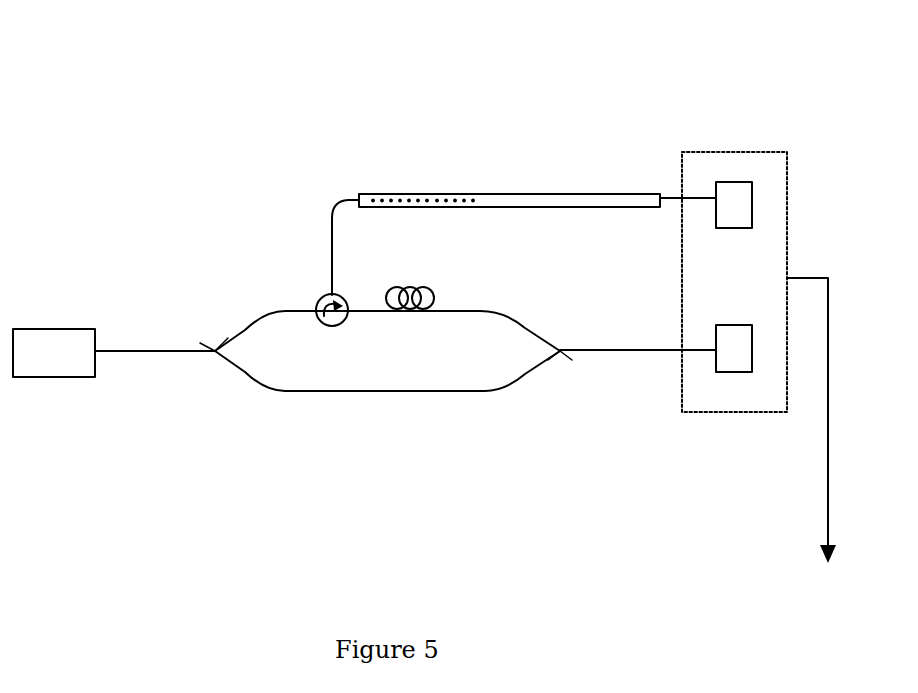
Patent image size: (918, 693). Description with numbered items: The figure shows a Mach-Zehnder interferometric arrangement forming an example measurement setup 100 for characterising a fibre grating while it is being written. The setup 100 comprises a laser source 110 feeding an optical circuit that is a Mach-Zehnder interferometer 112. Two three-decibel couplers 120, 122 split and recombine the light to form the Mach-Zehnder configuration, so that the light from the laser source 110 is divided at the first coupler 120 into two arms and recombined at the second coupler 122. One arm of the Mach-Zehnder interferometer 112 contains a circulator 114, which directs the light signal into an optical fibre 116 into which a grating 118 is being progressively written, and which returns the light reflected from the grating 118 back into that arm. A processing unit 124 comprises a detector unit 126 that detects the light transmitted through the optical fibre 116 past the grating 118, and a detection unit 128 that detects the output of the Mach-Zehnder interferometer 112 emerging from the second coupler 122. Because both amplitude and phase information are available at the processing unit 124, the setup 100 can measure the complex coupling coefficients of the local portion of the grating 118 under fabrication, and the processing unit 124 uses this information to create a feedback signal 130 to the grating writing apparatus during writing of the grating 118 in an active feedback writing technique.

The measurement setup 100 is at (186, 120).
The laser source 110 is at (45, 378).
The Mach-Zehnder interferometer 112 is at (328, 418).
The circulator 114 is at (322, 298).
The optical fibre 116 is at (369, 193).
The grating 118 is at (427, 186).
The 3 dB coupler 120 is at (214, 350).
The 3 dB coupler 122 is at (559, 355).
The processing unit 124 is at (682, 388).
The detector unit 126 is at (735, 182).
The detection unit 128 is at (728, 372).
The feedback signal 130 is at (828, 512).